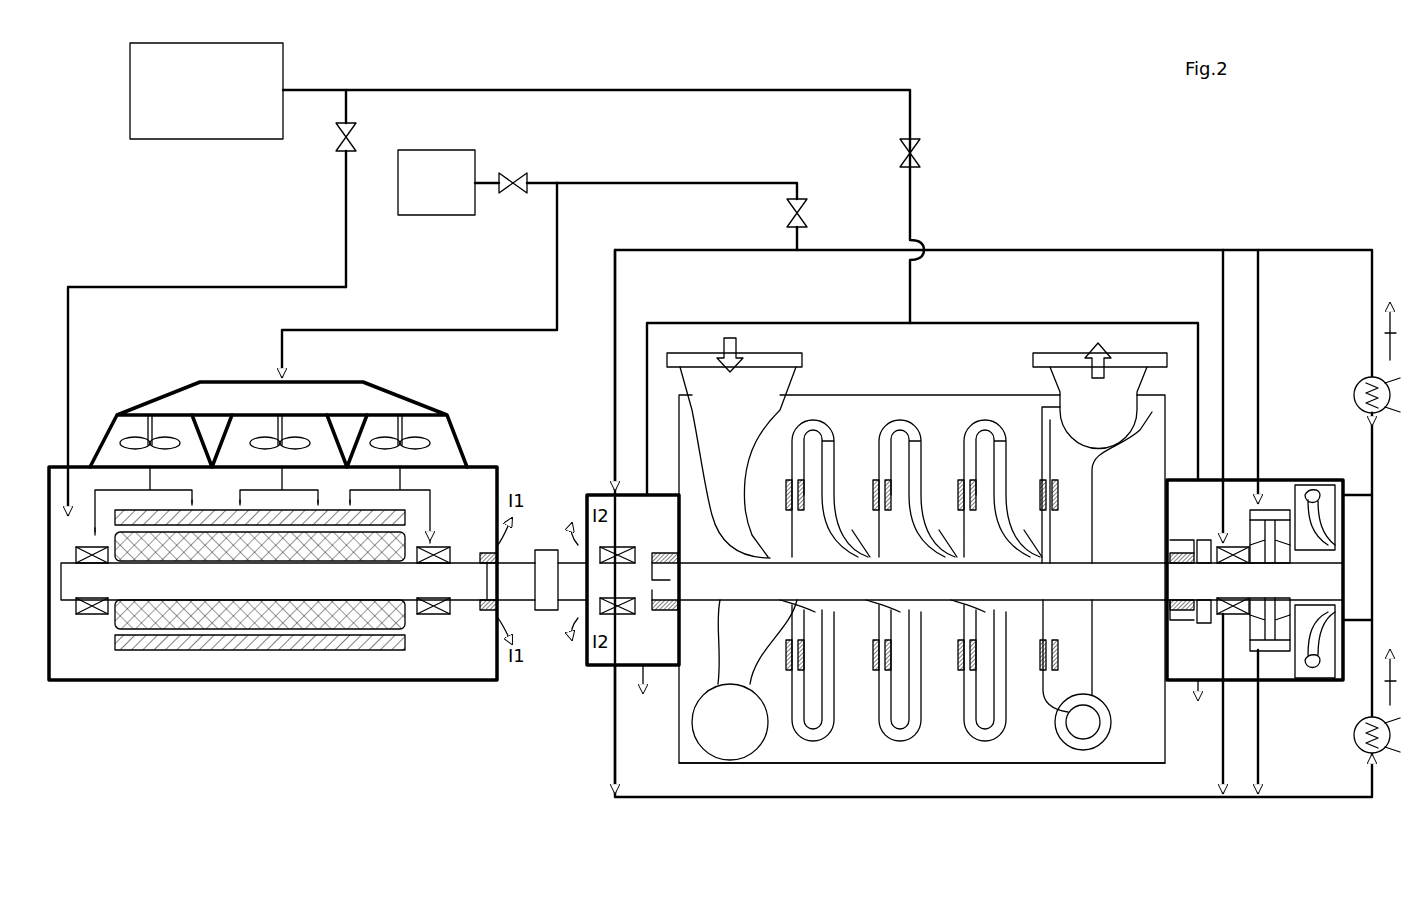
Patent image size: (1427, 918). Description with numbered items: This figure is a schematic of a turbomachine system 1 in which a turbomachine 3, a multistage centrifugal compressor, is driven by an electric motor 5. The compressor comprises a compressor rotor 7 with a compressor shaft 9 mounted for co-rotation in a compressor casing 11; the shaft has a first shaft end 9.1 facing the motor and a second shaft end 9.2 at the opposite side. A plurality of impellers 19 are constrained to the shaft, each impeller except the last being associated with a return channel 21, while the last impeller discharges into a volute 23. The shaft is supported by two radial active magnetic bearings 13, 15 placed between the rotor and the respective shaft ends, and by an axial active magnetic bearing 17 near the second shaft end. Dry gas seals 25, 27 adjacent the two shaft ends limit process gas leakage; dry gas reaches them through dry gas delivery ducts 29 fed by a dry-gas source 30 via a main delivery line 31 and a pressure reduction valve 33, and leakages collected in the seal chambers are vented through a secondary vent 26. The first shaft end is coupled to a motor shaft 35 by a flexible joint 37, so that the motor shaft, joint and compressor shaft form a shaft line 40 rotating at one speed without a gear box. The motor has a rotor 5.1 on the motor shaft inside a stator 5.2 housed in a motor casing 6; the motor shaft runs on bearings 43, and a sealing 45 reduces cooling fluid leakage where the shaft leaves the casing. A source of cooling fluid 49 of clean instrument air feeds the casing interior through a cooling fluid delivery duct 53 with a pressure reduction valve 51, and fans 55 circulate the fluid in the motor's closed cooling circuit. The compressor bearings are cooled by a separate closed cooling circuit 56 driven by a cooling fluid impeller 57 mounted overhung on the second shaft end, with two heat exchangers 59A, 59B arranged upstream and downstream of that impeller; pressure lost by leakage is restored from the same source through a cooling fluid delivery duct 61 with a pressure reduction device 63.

The turbomachine system 1 is at (655, 818).
The turbomachine 3 is at (917, 603).
The electric motor 5 is at (273, 555).
The rotor 5.1 is at (262, 618).
The stator 5.2 is at (235, 510).
The motor casing 6 is at (105, 672).
The compressor rotor 7 is at (905, 541).
The compressor shaft 9 is at (735, 562).
The first shaft end 9.1 is at (590, 582).
The second shaft end 9.2 is at (1328, 586).
The compressor casing 11 is at (1005, 757).
The radial active magnetic bearing 13 is at (620, 565).
The radial active magnetic bearing 15 is at (1233, 566).
The axial active magnetic bearing 17 is at (1283, 680).
The impellers 19 is at (786, 518).
The return channel 21 is at (832, 452).
The volute 23 is at (1108, 437).
The dry gas seal 25 is at (670, 620).
The secondary vent 26 is at (655, 680).
The dry gas seal 27 is at (1185, 622).
The dry gas delivery ducts 29 is at (646, 348).
The dry-gas source 30 is at (140, 105).
The main delivery line 31 is at (904, 88).
The pressure reduction valve 33 is at (922, 153).
The motor shaft 35 is at (488, 576).
The flexible joint 37 is at (557, 604).
The shaft line 40 is at (545, 618).
The bearings 43 is at (100, 615).
The sealing 45 is at (486, 550).
The source of cooling fluid 49 is at (446, 216).
The pressure reduction valve 51 is at (510, 172).
The cooling fluid delivery duct 53 is at (462, 328).
The fans 55 is at (122, 432).
The closed cooling circuit 56 is at (1355, 520).
The cooling fluid impeller 57 is at (1343, 540).
The heat exchanger 59A is at (1355, 740).
The heat exchanger 59B is at (1355, 395).
The cooling fluid delivery duct 61 is at (718, 182).
The pressure reduction device 63 is at (808, 212).